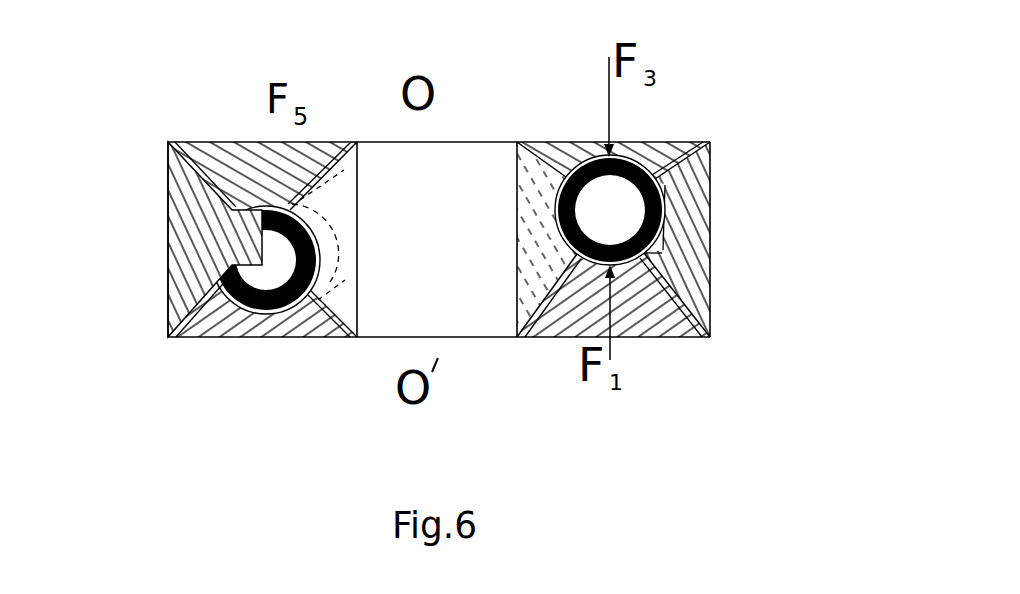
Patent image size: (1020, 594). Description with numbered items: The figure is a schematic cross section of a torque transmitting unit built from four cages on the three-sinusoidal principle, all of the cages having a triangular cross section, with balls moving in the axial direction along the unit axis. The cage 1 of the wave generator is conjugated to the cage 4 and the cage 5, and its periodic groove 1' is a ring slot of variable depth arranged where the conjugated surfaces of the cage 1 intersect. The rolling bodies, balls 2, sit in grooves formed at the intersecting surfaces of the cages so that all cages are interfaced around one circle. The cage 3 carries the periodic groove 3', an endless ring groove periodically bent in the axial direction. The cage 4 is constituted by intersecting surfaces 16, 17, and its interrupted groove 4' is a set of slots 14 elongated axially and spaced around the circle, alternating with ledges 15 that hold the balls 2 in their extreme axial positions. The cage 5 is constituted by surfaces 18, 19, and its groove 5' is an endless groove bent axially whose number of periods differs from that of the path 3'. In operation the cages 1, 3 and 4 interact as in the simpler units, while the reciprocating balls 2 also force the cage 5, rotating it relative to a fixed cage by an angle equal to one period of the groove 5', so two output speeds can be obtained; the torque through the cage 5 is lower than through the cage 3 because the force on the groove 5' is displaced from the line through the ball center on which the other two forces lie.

The cage of the wave generator 1 is at (614, 336).
The periodic groove of cage 1 1' is at (248, 343).
The rolling bodies (balls) 2 is at (602, 202).
The cage 3 is at (628, 106).
The periodic groove of cage 3 3' is at (205, 120).
The cage 4 is at (755, 201).
The interrupted groove of cage 4 4' is at (762, 186).
The cage 5 is at (350, 239).
The groove of cage 5 5' is at (353, 235).
The slots 14 is at (658, 257).
The ledges 15 is at (238, 242).
The surface of cage 4 16 is at (710, 141).
The surface of cage 4 17 is at (692, 310).
The surface of cage 5 18 is at (336, 148).
The surface of cage 5 19 is at (337, 332).